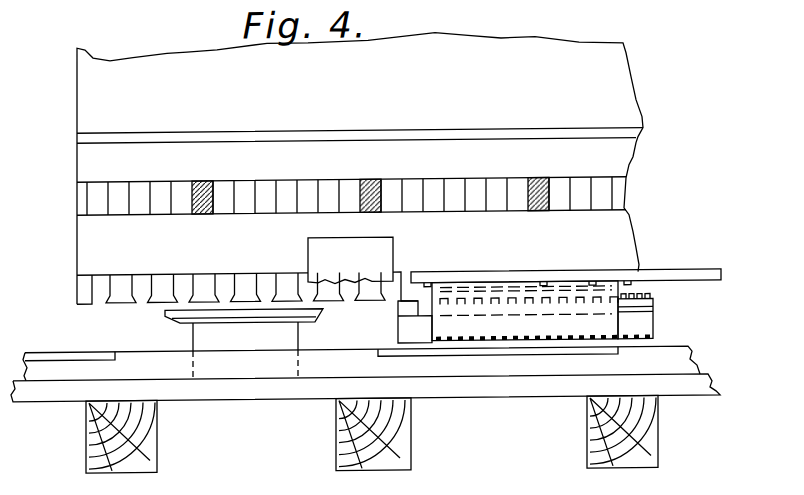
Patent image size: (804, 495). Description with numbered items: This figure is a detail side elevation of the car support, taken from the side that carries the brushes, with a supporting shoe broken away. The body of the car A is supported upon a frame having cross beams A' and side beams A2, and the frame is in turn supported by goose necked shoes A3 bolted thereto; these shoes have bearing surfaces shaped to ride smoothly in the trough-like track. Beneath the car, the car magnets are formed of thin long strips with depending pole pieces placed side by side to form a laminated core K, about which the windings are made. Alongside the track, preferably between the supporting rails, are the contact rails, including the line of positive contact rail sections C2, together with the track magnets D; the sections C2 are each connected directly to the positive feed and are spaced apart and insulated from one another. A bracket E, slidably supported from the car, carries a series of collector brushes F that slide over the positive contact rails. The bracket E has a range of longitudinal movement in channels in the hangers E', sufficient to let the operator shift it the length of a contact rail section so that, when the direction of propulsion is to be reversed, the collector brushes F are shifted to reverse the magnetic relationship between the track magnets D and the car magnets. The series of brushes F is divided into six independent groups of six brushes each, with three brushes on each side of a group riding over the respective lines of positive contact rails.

The car A is at (360, 168).
The cross beams A' is at (372, 197).
The side beams A2 is at (294, 265).
The goose necked shoes A3 is at (350, 260).
The laminated core K is at (243, 292).
The track magnets D is at (296, 340).
The hangers E' is at (566, 259).
The bracket E is at (524, 311).
The collector brushes F is at (635, 315).
The contact rail C2 is at (72, 351).